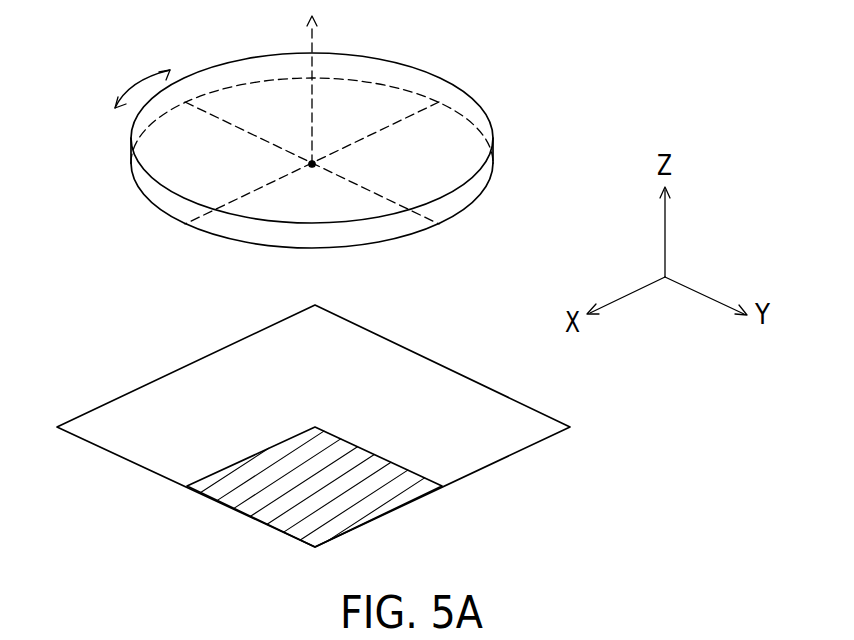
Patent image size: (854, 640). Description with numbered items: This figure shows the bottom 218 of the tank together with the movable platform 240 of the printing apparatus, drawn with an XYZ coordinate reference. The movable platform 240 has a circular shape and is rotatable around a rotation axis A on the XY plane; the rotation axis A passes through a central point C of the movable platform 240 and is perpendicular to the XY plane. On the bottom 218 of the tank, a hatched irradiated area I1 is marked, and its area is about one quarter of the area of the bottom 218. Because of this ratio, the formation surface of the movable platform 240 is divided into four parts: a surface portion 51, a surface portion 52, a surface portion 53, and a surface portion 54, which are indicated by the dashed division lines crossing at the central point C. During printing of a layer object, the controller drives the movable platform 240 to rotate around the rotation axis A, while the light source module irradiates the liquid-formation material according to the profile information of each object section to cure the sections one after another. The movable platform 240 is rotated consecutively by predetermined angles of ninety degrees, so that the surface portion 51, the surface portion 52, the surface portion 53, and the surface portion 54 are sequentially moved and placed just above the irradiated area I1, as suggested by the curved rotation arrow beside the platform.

The movable platform 240 is at (493, 165).
The surface portion 51 is at (363, 212).
The surface portion 52 is at (443, 132).
The surface portion 53 is at (248, 102).
The surface portion 54 is at (178, 151).
The bottom of the tank 218 is at (467, 463).
The irradiated area I1 is at (355, 518).
The rotation axis A is at (311, 44).
The central point C is at (312, 164).